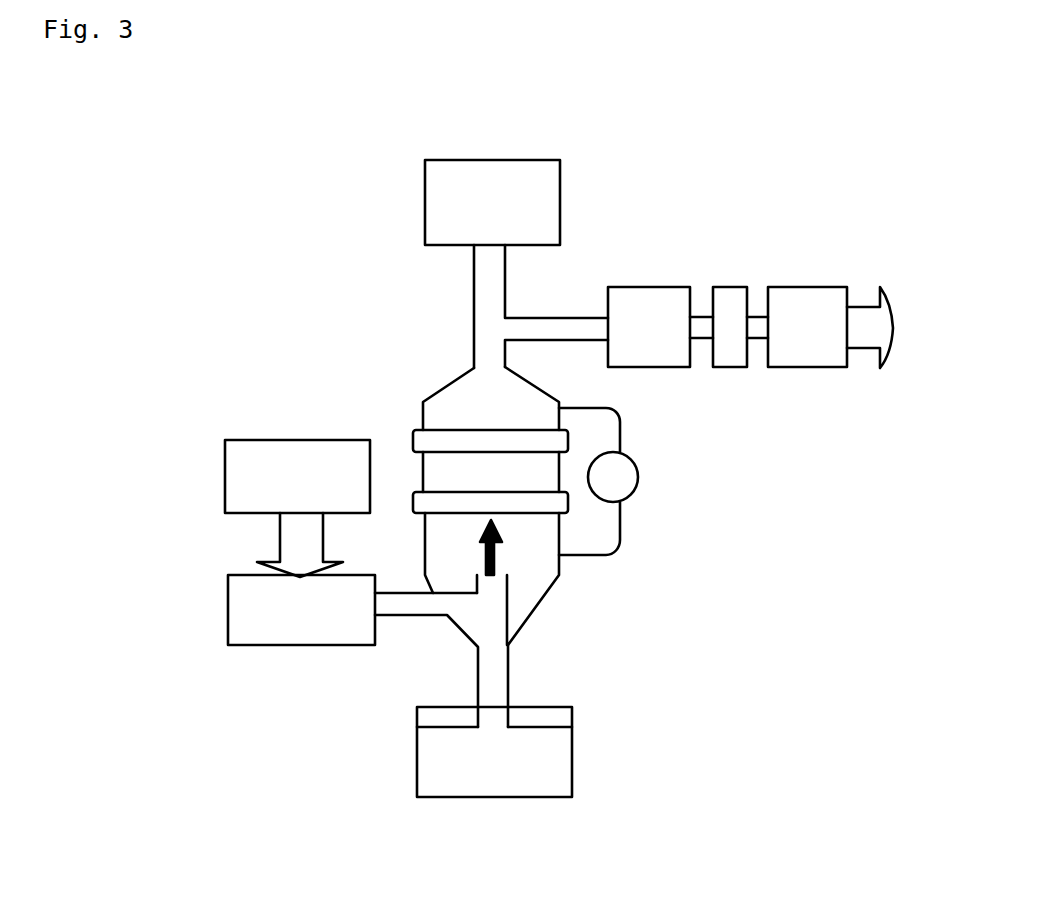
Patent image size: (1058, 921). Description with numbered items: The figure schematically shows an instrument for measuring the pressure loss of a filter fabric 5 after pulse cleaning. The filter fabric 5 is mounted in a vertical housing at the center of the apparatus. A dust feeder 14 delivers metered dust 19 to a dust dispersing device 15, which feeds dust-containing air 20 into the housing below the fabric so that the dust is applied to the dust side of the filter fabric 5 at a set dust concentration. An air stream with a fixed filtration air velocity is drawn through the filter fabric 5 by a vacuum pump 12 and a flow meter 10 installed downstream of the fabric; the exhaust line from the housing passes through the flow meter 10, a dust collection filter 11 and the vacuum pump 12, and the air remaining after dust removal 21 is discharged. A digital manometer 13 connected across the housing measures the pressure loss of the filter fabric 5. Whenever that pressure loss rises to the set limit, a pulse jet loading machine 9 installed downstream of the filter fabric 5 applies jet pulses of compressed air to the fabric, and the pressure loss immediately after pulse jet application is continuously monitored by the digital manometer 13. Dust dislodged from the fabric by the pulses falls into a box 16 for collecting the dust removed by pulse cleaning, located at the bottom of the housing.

The filter fabric 5 is at (433, 467).
The pulse jet loading machine 9 is at (528, 197).
The flow meter 10 is at (653, 313).
The dust collection filter 11 is at (733, 310).
The vacuum pump 12 is at (800, 350).
The digital manometer 13 is at (620, 477).
The dust feeder 14 is at (257, 473).
The dust dispersing device 15 is at (280, 618).
The box for collecting the dust removed by pulse cleaning 16 is at (452, 772).
The metered dust 19 is at (300, 540).
The dust-containing air 20 is at (495, 553).
The air remaining after dust removal 21 is at (863, 338).